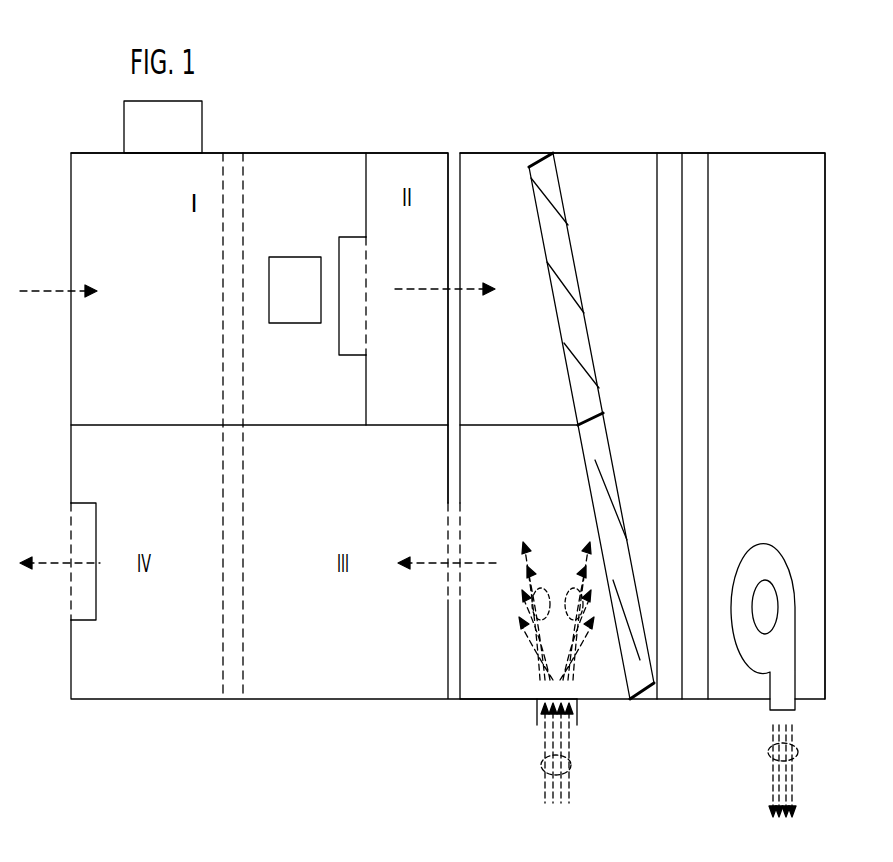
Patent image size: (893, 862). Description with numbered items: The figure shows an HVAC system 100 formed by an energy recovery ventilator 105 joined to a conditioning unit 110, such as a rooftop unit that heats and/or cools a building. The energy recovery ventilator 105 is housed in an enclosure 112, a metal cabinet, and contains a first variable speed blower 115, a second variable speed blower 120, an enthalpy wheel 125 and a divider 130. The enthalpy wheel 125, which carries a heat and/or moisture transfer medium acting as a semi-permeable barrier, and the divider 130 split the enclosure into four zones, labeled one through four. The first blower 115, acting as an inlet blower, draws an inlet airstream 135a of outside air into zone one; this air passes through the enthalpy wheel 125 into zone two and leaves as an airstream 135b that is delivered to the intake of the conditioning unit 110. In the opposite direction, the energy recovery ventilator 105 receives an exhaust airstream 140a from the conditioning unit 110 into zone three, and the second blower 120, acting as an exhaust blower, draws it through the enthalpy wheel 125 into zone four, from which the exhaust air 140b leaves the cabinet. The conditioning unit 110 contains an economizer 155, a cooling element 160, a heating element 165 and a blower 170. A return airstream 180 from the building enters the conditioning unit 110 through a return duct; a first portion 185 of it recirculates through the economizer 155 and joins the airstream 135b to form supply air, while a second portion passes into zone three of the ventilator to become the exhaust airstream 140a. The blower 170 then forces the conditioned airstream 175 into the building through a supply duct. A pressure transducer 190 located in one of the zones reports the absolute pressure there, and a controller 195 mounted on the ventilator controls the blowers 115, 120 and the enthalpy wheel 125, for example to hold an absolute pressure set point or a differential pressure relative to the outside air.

The HVAC system 100 is at (523, 85).
The energy recovery ventilator 105 is at (318, 150).
The conditioning unit 110 is at (776, 150).
The enclosure 112 is at (262, 153).
The first variable speed blower 115 is at (355, 237).
The second variable speed blower 120 is at (80, 622).
The enthalpy wheel 125 is at (222, 572).
The divider 130 is at (134, 425).
The inlet airstream 135a is at (50, 290).
The airstream 135b is at (430, 288).
The exhaust airstream 140a is at (430, 566).
The exhaust air flow 140b is at (52, 568).
The economizer 155 is at (567, 255).
The cooling element 160 is at (657, 392).
The heating element 165 is at (708, 392).
The blower 170 is at (785, 550).
The airstream 175 is at (800, 752).
The return airstream 180 is at (572, 765).
The first portion 185 is at (564, 590).
The pressure transducer 190 is at (282, 306).
The controller 195 is at (124, 127).